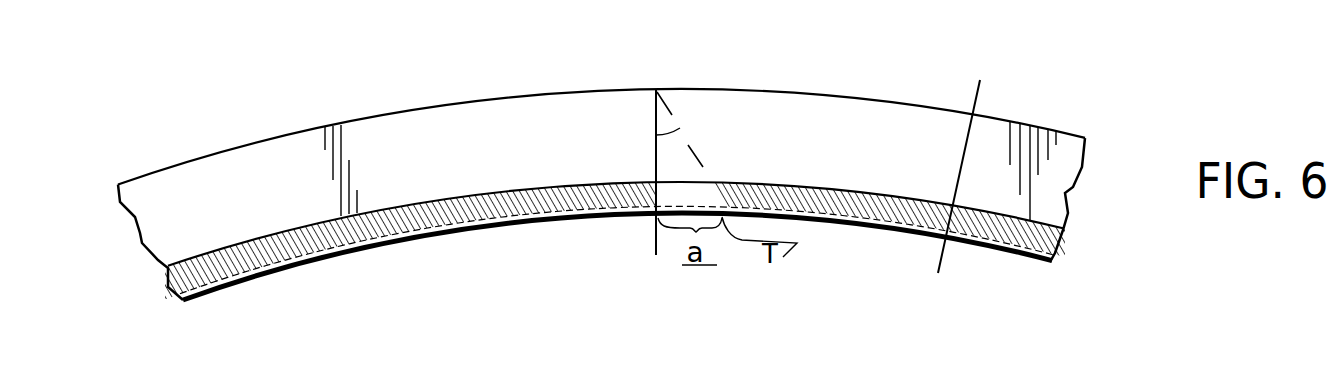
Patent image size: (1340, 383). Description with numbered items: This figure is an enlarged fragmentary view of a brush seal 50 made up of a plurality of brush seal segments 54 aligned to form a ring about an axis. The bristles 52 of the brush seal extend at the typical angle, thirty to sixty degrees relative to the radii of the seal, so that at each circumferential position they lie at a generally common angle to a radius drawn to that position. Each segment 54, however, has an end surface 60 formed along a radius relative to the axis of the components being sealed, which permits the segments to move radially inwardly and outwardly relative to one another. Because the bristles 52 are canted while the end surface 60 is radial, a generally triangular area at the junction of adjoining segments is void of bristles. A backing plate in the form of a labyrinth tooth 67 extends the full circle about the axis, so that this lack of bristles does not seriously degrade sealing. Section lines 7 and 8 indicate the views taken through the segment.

The brush seal 50 is at (268, 69).
The bristles 52 is at (380, 250).
The brush seal segment 54 is at (722, 103).
The end surface 60 is at (653, 102).
The labyrinth tooth 67 is at (693, 200).
The section line 7- 7 is at (670, 158).
The section line 8- 8 is at (997, 95).